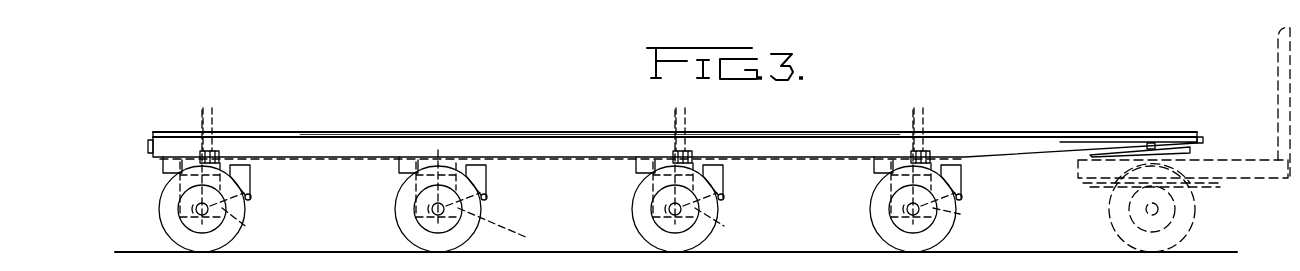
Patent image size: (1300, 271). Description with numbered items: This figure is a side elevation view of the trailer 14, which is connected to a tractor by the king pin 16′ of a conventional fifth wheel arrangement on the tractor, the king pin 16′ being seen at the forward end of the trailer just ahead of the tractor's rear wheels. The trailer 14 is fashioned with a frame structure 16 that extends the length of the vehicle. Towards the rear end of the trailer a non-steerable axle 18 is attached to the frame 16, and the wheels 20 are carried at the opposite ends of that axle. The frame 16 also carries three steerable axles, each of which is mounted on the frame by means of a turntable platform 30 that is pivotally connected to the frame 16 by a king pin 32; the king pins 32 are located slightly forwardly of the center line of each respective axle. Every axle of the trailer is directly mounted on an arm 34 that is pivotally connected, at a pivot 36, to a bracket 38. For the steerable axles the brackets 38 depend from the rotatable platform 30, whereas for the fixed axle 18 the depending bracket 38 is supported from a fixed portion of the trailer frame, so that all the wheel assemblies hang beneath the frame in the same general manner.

The trailer 14 is at (965, 127).
The frame structure 16 is at (582, 143).
The king pin 16′ is at (1154, 144).
The non-steerable axle 18 is at (430, 220).
The wheels 20 is at (477, 240).
The turntable platform 30 is at (163, 170).
The king pin 32 is at (212, 151).
The arm 34 is at (248, 228).
The pivotal connection 36 is at (251, 199).
The bracket 38 is at (251, 182).